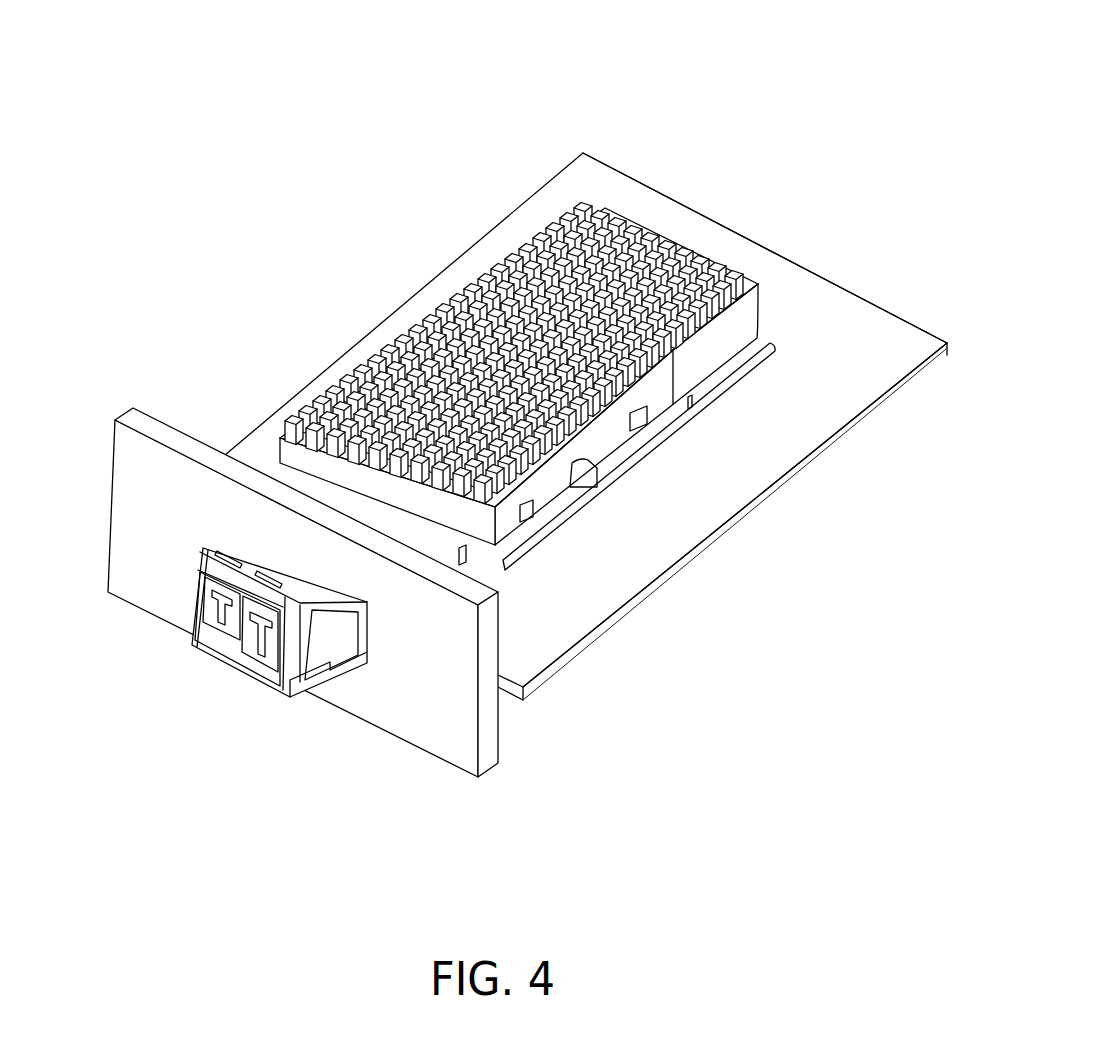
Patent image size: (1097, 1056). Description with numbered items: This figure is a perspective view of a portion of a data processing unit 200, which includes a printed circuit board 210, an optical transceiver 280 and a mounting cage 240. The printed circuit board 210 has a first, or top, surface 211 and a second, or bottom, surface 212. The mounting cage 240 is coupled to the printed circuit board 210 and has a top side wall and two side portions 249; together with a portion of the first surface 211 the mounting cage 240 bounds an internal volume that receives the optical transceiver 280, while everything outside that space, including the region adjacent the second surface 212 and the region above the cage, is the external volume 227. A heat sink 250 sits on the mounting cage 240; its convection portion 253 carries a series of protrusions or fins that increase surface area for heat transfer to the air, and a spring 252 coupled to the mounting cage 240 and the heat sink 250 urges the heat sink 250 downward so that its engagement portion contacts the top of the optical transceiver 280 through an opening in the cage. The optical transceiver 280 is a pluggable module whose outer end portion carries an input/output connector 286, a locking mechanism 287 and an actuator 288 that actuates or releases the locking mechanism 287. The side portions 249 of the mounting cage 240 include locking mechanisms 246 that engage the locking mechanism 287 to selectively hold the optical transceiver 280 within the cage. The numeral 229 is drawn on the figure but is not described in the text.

The data processing unit 200 is at (352, 86).
The printed circuit board 210 is at (828, 418).
The first surface 211 is at (630, 572).
The second surface 212 is at (607, 640).
The external volume 227 is at (733, 749).
The faceplate 229 is at (152, 428).
The mounting cage 240 is at (765, 312).
The locking mechanisms 246 is at (468, 560).
The side portions 249 is at (705, 353).
The heat sink 250 is at (516, 270).
The spring 252 is at (607, 423).
The convection portion 253 is at (548, 298).
The optical transceiver 280 is at (267, 712).
The input/output connector 286 is at (268, 652).
The locking mechanism 287 is at (352, 648).
The actuator 288 is at (248, 573).